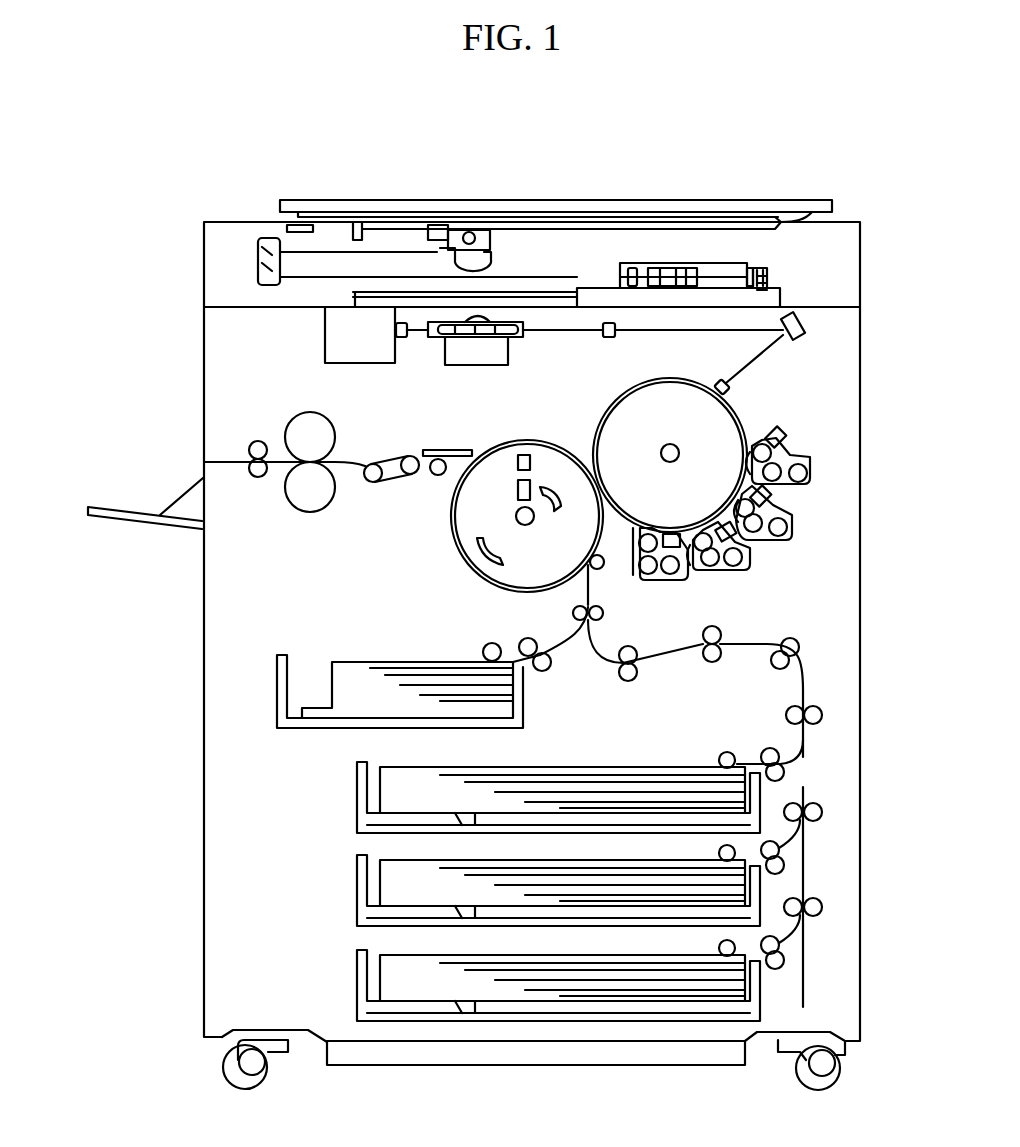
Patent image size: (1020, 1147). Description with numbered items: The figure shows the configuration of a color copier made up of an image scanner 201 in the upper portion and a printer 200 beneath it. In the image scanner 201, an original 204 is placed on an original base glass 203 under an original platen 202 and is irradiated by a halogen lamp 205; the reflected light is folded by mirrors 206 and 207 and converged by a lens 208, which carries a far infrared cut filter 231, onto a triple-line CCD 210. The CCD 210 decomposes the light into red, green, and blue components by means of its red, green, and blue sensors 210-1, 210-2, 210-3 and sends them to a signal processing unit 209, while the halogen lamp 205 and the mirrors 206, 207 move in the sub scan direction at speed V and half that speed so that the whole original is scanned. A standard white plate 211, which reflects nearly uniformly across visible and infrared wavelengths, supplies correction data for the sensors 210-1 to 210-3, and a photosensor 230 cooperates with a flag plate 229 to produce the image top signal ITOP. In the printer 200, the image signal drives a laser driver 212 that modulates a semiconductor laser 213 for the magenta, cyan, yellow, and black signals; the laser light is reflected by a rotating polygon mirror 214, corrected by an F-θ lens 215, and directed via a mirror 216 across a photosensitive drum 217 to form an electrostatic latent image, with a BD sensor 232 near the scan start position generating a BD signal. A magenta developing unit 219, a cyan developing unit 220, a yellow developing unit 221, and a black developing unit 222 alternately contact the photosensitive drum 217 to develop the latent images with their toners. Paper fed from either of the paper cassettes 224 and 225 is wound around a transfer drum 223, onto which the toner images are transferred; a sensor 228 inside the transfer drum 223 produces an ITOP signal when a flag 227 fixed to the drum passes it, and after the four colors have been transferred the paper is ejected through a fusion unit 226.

The printer 200 is at (860, 440).
The image scanner 201 is at (858, 222).
The original platen 202 is at (287, 207).
The original base glass 203 is at (793, 213).
The original 204 is at (474, 230).
The halogen lamp 205 is at (430, 232).
The mirror 206 is at (472, 262).
The mirror 207 is at (258, 265).
The lens 208 is at (668, 268).
The signal processing unit 209 is at (785, 306).
The CCD 210 is at (757, 265).
The red sensor 210-1 is at (757, 276).
The green sensor 210-2 is at (757, 284).
The blue sensor 210-3 is at (768, 294).
The standard white plate 211 is at (305, 225).
The laser driver 212 is at (325, 347).
The semiconductor laser 213 is at (404, 337).
The rotating polygon mirror 214 is at (487, 337).
The F-θ lens 215 is at (609, 337).
The mirror 216 is at (802, 338).
The photosensitive drum 217 is at (747, 427).
The magenta developing unit 219 is at (733, 570).
The cyan developing unit 220 is at (783, 540).
The yellow developing unit 221 is at (797, 484).
The black developing unit 222 is at (657, 575).
The transfer drum 223 is at (473, 567).
The paper cassette 224 is at (527, 707).
The paper cassette 225 is at (760, 993).
The fusion unit 226 is at (312, 512).
The flag 227 is at (499, 548).
The sensor 228 is at (518, 458).
The flag plate 229 is at (508, 212).
The photosensor 230 is at (355, 222).
The far infrared cut filter 231 is at (631, 268).
The BD sensor 232 is at (720, 382).